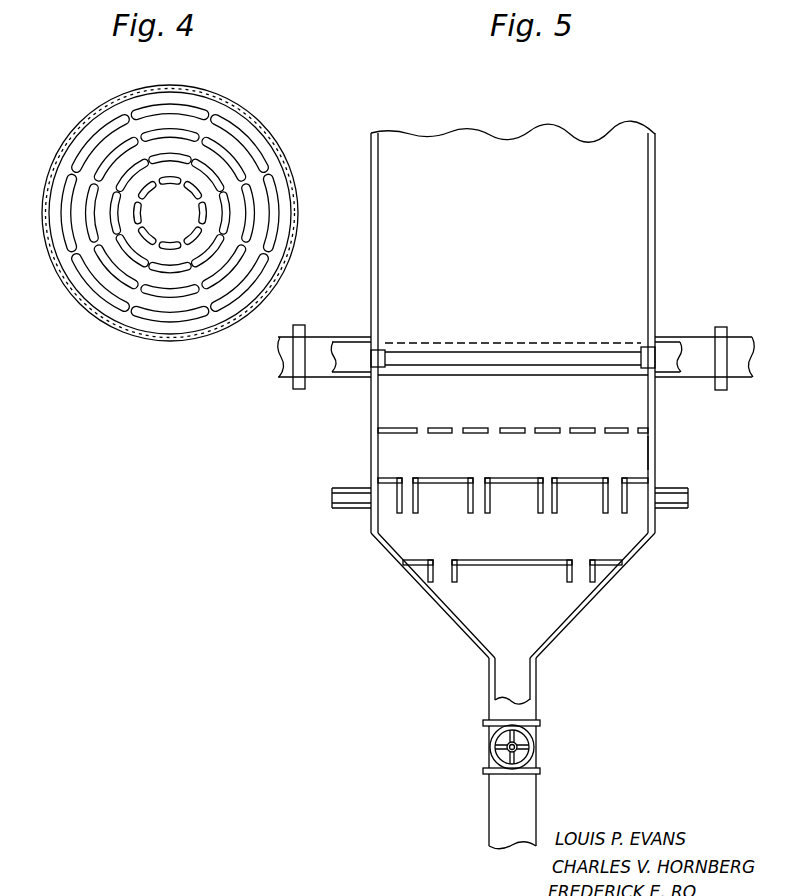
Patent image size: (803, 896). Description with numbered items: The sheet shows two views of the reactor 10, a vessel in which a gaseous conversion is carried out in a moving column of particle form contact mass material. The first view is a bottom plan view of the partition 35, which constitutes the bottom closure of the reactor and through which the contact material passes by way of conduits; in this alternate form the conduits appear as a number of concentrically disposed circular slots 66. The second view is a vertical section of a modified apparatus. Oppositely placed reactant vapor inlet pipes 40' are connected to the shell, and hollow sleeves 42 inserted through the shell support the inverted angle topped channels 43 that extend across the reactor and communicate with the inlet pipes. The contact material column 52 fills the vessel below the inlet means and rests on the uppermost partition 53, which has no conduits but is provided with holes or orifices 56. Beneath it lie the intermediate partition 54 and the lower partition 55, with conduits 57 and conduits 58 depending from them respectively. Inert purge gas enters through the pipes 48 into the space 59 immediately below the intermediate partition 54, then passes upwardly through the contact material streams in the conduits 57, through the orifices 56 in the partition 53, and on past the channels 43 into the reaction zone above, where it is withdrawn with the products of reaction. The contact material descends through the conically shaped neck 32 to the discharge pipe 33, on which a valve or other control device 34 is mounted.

In FIG. 4, the reactor 10 is at (47, 172).
In FIG. 5, the reactor 10 is at (371, 198).
In FIG. 4, the partition 35 is at (250, 128).
In FIG. 4, the circular slots 66 is at (95, 133).
In FIG. 5, the reactant vapor inlet pipes 40' is at (516, 342).
In FIG. 5, the hollow sleeves 42 is at (375, 357).
In FIG. 5, the inverted angle topped channels 43 is at (618, 340).
In FIG. 5, the material bed 52 is at (413, 395).
In FIG. 5, the uppermost partition 53 is at (620, 432).
In FIG. 5, the holes or orifices 56 is at (657, 447).
In FIG. 5, the intermediate partition 54 is at (437, 476).
In FIG. 5, the conduits 57 is at (627, 507).
In FIG. 5, the space 59 is at (582, 512).
In FIG. 5, the pipes 48 is at (332, 497).
In FIG. 5, the partition 55 is at (400, 555).
In FIG. 5, the conduits 58 is at (593, 573).
In FIG. 5, the conically shaped neck 32 is at (463, 630).
In FIG. 5, the discharge pipe 33 is at (537, 684).
In FIG. 5, the valve or other control device 34 is at (535, 747).